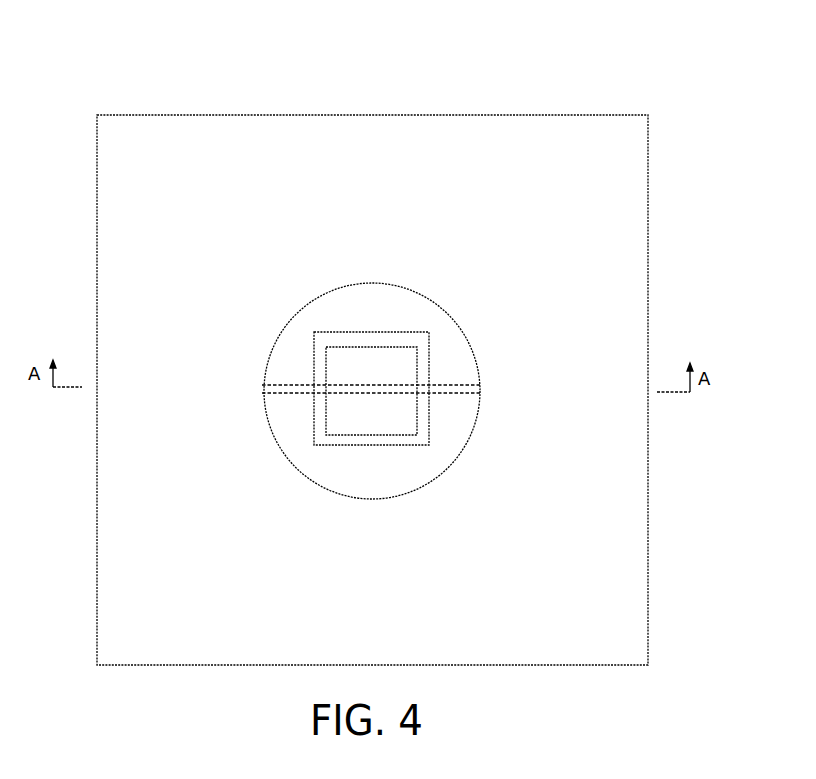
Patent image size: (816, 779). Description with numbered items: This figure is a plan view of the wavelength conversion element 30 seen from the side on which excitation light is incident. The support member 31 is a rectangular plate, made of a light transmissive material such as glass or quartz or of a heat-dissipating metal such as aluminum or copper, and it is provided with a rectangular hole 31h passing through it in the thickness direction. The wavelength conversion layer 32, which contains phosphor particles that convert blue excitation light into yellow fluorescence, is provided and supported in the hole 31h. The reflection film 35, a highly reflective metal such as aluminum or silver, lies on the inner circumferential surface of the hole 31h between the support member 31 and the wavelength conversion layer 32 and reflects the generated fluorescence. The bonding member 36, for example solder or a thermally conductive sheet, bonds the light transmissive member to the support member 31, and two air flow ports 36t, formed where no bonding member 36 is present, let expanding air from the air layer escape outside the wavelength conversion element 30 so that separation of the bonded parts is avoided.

The wavelength conversion element 30 is at (198, 96).
The support member 31 is at (523, 130).
The hole 31h is at (318, 363).
The wavelength conversion layer 32 is at (335, 424).
The reflection film 35 is at (425, 355).
The bonding member 36 is at (475, 363).
The air flow ports 36t is at (268, 390).